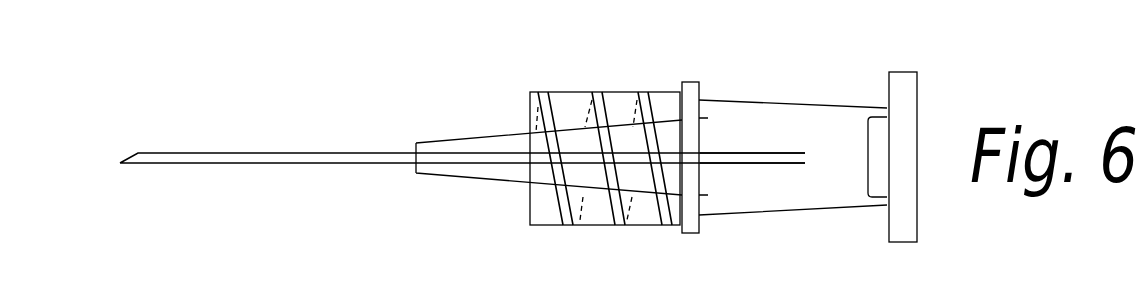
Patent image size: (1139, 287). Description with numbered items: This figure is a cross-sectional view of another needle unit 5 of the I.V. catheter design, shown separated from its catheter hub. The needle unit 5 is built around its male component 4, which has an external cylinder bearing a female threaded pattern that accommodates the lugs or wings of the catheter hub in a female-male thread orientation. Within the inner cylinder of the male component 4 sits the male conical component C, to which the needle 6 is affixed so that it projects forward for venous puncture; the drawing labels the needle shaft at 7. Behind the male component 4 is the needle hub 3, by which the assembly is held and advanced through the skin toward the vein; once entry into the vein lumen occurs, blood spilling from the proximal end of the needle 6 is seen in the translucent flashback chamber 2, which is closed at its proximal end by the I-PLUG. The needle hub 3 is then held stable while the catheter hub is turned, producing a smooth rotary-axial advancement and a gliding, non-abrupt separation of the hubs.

The needle 7 is at (128, 158).
The male component 4 is at (681, 77).
The male conical component C is at (562, 130).
The needle hub 3 is at (880, 83).
The needle unit 5 is at (880, 47).
The needle 6 is at (805, 154).
The flashback chamber 2 is at (847, 180).
The plug I-PLUG is at (902, 105).